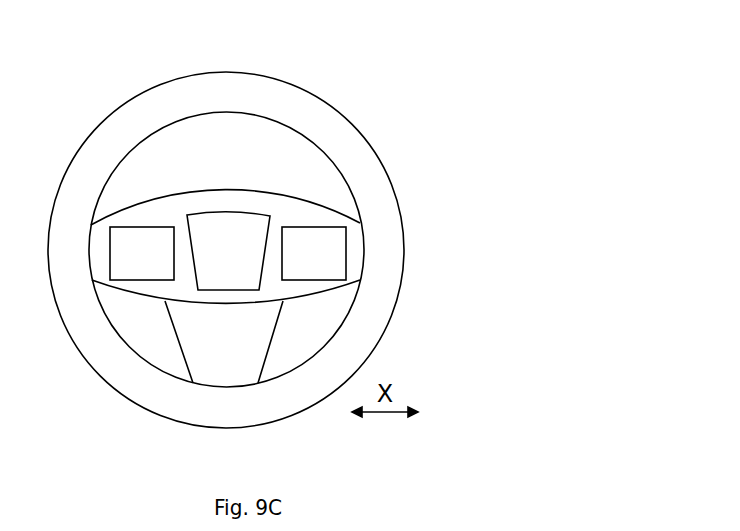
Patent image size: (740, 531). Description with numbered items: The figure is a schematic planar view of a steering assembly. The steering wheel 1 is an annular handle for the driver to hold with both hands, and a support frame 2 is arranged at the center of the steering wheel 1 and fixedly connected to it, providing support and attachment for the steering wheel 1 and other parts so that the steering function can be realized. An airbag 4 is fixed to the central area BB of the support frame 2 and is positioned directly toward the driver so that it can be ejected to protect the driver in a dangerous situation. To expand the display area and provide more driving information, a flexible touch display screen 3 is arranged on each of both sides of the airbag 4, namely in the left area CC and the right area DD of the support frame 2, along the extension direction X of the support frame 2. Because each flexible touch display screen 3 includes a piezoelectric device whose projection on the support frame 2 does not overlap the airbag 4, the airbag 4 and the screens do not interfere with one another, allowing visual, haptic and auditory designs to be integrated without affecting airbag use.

The steering wheel 1 is at (343, 147).
The support frame 2 is at (192, 191).
The flexible touch display screen 3 is at (228, 253).
The airbag 4 is at (228, 251).